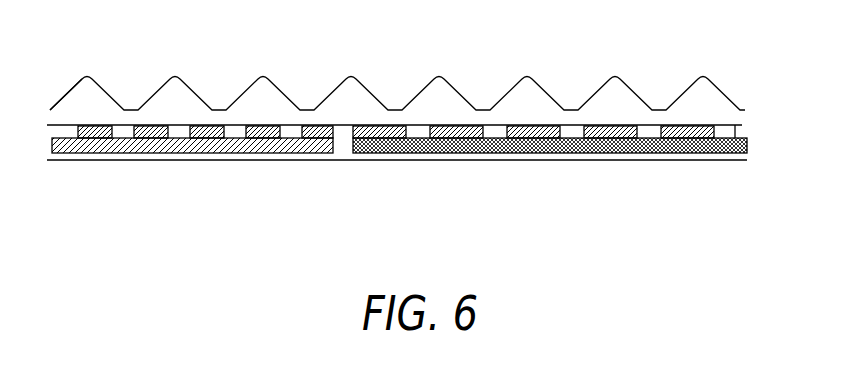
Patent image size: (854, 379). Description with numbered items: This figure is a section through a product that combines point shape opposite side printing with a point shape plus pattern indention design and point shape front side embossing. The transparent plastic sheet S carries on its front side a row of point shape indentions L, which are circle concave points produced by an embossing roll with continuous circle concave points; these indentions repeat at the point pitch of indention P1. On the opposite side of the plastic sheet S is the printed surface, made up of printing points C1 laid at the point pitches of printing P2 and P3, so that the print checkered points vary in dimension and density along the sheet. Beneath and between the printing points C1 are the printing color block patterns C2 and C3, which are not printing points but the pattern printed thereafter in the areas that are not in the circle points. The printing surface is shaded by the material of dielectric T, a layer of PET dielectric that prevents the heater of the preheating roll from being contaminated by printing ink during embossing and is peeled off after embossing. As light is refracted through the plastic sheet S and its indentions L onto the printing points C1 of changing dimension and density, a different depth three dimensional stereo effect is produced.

The point shape indention L is at (175, 67).
The plastic sheet S is at (69, 97).
The material of dielectric T is at (505, 170).
The printing point C1 is at (87, 140).
The printing color block pattern C2 is at (157, 158).
The printing color block pattern C3 is at (430, 163).
The point pitch of indention P1 is at (703, 43).
The point pitch of printing P2 is at (225, 140).
The point pitch of printing P3 is at (584, 125).